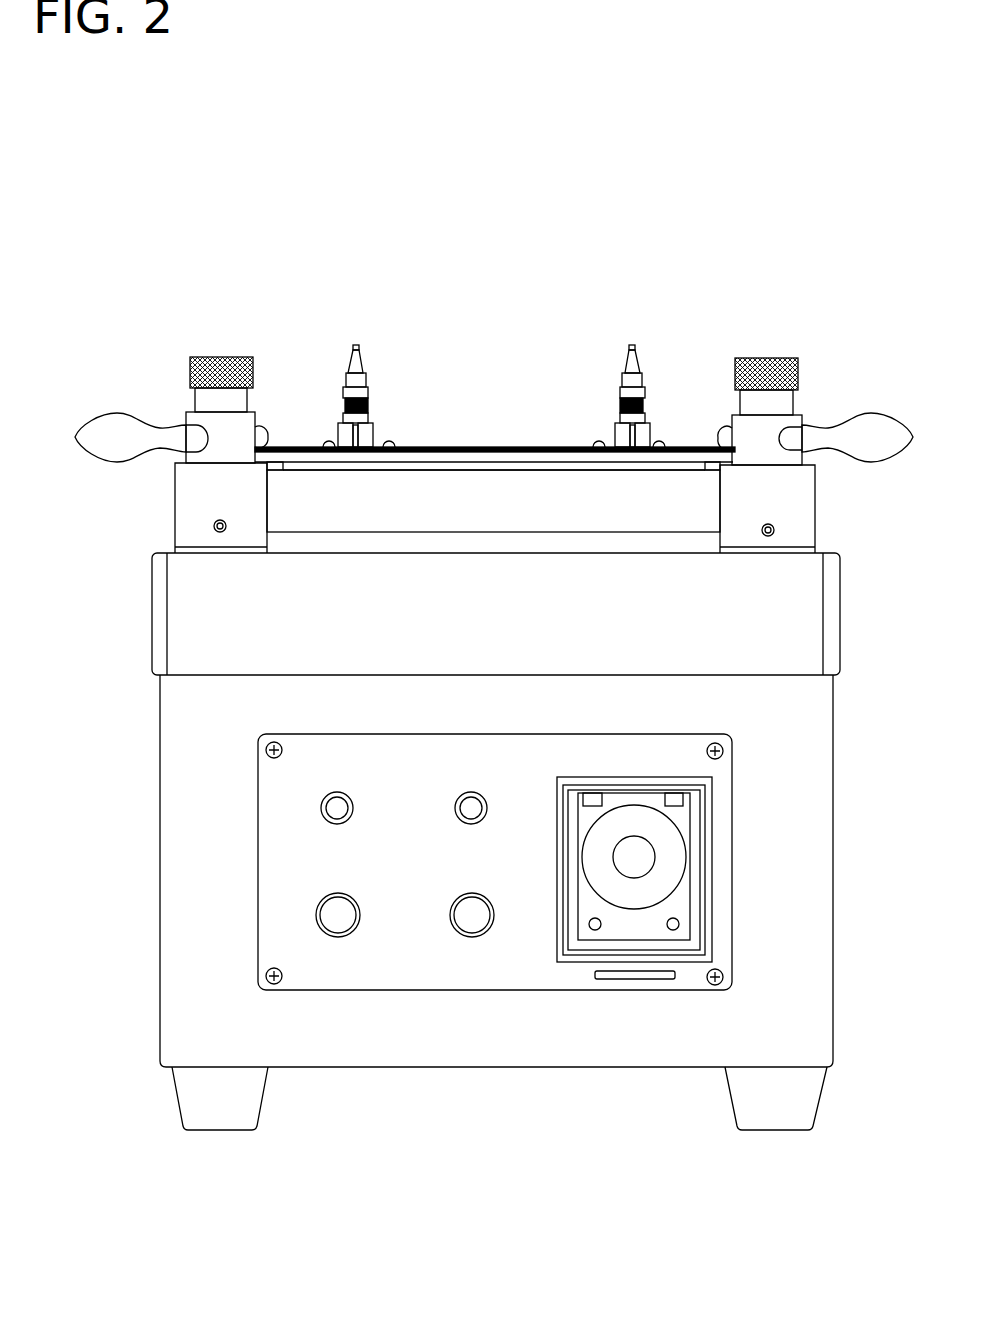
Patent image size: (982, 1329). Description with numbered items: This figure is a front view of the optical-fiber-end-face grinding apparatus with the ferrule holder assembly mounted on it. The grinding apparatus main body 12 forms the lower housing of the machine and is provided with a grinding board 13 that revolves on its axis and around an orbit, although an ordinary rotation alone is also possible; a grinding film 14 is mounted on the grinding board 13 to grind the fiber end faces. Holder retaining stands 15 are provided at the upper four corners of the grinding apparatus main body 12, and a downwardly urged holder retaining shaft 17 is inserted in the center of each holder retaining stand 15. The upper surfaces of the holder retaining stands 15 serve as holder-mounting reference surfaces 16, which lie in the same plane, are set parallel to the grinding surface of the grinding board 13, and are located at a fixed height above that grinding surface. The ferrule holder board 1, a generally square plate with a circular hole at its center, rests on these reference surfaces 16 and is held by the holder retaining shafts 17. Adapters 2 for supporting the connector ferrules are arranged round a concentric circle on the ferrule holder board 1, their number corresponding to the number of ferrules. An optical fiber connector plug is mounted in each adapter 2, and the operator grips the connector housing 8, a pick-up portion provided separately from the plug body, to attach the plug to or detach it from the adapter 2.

The ferrule holder board 1 is at (500, 447).
The adapter 2 is at (342, 440).
The connector housing 8 is at (360, 393).
The grinding apparatus main body 12 is at (802, 627).
The grinding board 13 is at (500, 512).
The grinding film 14 is at (427, 468).
The holder retaining stand 15 is at (803, 518).
The holder-mounting reference surface 16 is at (764, 465).
The holder retaining shaft 17 is at (762, 435).